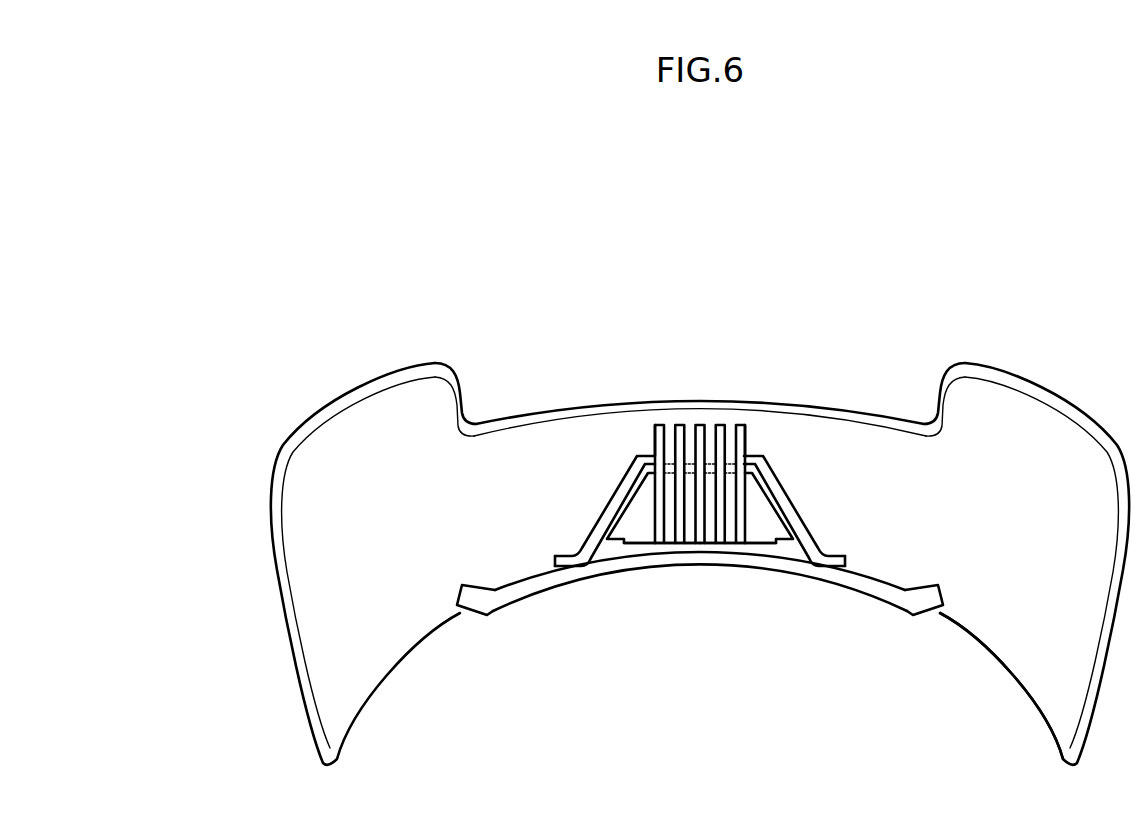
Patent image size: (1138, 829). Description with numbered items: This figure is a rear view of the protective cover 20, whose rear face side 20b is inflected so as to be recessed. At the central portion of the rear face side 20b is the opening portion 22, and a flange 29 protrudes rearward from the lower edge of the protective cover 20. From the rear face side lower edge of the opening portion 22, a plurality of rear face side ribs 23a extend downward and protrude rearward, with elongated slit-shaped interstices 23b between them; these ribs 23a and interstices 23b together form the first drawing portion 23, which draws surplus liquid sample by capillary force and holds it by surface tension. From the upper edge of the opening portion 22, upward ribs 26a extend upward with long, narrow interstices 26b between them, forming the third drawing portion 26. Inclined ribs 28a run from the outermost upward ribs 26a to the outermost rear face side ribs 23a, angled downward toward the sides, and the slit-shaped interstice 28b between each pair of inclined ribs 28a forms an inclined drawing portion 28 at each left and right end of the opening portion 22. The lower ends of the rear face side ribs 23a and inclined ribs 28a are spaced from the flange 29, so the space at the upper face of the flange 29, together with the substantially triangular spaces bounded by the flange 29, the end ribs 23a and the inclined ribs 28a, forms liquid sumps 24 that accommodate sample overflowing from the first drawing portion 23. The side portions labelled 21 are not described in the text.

The protective cover 20 is at (453, 270).
The rear face side 20b is at (953, 533).
The side portion 21 is at (367, 408).
The opening portion 22 is at (738, 457).
The first drawing portion 23 is at (700, 619).
The rear face side ribs 23a is at (702, 533).
The interstices 23b is at (733, 542).
The liquid sumps 24 is at (639, 536).
The third drawing portion 26 is at (676, 400).
The upward ribs 26a is at (653, 428).
The interstices 26b is at (700, 425).
The inclined drawing portion 28 is at (665, 437).
The inclined ribs 28a is at (637, 482).
The interstices 28b is at (600, 514).
The flange 29 is at (537, 580).